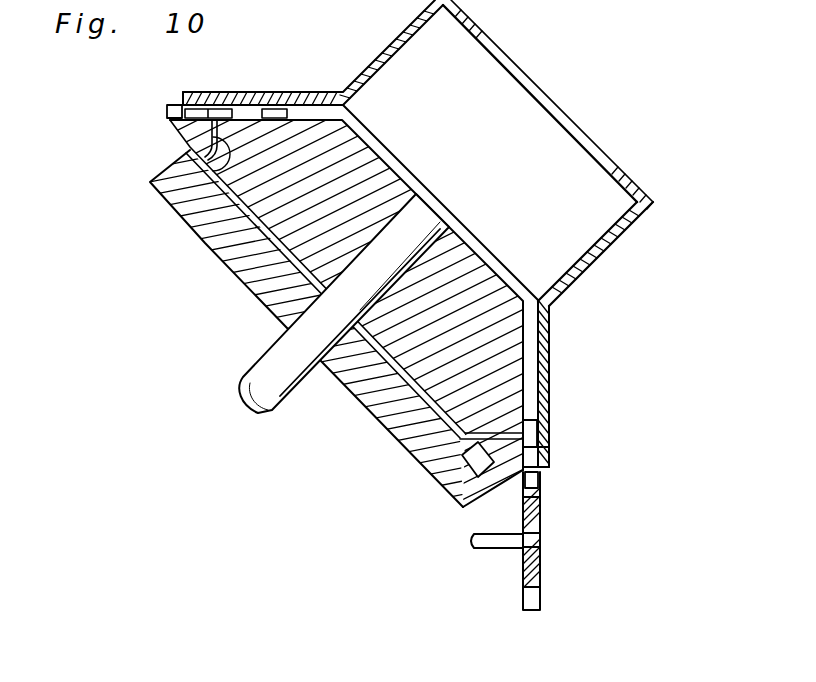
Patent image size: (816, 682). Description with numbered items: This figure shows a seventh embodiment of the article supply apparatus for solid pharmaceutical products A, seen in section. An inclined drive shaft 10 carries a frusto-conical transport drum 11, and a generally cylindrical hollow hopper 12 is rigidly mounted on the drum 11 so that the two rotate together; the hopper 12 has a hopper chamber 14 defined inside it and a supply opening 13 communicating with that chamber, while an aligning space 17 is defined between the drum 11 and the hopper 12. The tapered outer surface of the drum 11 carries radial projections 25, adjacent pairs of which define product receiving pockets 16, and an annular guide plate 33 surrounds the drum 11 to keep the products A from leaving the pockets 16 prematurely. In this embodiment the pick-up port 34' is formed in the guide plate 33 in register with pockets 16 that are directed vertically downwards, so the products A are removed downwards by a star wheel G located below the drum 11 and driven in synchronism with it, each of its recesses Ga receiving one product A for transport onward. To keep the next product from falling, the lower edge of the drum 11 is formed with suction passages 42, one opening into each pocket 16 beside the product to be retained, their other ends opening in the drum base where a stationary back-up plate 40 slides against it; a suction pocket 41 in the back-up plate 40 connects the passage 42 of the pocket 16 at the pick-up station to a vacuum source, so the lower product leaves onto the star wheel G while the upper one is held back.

The drive shaft 10 is at (270, 372).
The transport drum 11 is at (300, 203).
The hopper 12 is at (597, 258).
The supply opening 13 is at (530, 80).
The hopper chamber 14 is at (535, 175).
The product receiving pocket 16 is at (530, 453).
The aligning space 17 is at (530, 355).
The radial projection 25 is at (533, 462).
The guide plate 33 is at (167, 110).
The pick-up port 34' is at (611, 508).
The back-up plate 40 is at (377, 380).
The suction pocket 41 is at (477, 460).
The suction passage 42 is at (200, 190).
The solid pharmaceutical product A is at (527, 433).
The star wheel G is at (540, 568).
The recess Ga is at (530, 600).